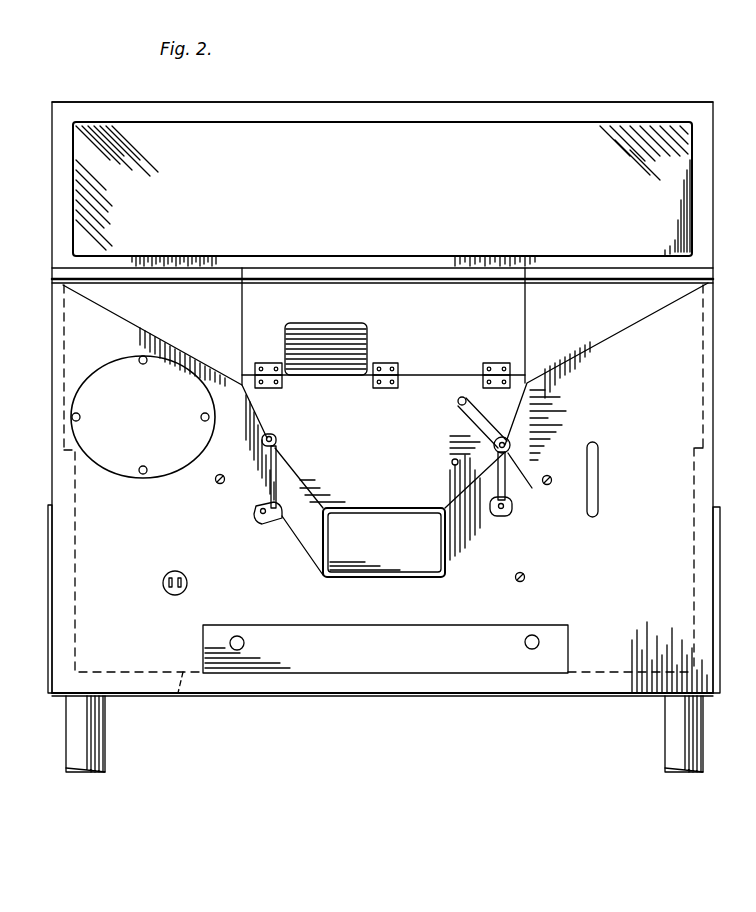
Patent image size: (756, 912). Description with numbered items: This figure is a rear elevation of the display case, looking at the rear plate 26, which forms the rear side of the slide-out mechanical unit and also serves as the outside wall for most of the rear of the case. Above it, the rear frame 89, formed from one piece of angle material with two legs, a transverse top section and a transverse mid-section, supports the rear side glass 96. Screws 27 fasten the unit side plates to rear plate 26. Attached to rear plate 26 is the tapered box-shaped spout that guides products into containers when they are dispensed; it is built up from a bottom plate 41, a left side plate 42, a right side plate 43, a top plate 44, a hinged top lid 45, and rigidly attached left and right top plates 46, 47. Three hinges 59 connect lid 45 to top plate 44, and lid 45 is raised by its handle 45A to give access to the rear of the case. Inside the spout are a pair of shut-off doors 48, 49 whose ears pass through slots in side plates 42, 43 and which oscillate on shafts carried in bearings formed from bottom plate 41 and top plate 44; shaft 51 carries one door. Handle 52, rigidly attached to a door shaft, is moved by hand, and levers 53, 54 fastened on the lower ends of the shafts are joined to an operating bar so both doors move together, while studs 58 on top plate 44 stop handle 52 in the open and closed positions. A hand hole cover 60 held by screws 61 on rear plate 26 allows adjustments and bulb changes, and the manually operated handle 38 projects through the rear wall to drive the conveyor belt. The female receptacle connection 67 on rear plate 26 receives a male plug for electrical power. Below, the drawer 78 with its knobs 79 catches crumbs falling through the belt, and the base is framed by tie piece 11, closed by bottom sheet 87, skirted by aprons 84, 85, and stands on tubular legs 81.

The rear side glass 96 is at (463, 130).
The rear frame 89 is at (585, 108).
The apron 85 is at (50, 545).
The apron 84 is at (713, 543).
The rear plate 26 is at (385, 489).
The hinged top lid 45 is at (383, 326).
The handle 45A is at (369, 342).
The hinges 59 is at (399, 371).
The right side rigidly attached top plate 47 is at (168, 392).
The left side rigidly attached top plate 46 is at (606, 371).
The hand hole cover 60 is at (116, 372).
The screws 61 is at (147, 466).
The shut-off door 49 is at (278, 443).
The shaft 51 is at (278, 473).
The lever 54 is at (276, 525).
The handle 52 is at (476, 427).
The lever 53 is at (505, 516).
The studs 58 is at (470, 412).
The shut-off door 48 is at (500, 527).
The top plate 44 is at (384, 531).
The right side plate 43 is at (312, 547).
The bottom plate 41 is at (413, 563).
The left side plate 42 is at (462, 560).
The manually operated handle 38 is at (600, 494).
The screws 27 is at (218, 485).
The female receptacle connection 67 is at (169, 591).
The drawer 78 is at (385, 649).
The knobs 79 is at (243, 648).
The bottom sheet 87 is at (411, 696).
The tie piece 11 is at (178, 696).
The tubular legs 81 is at (104, 720).